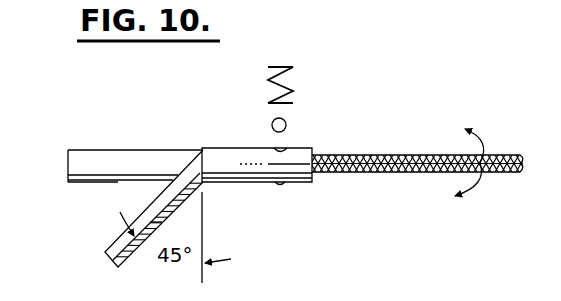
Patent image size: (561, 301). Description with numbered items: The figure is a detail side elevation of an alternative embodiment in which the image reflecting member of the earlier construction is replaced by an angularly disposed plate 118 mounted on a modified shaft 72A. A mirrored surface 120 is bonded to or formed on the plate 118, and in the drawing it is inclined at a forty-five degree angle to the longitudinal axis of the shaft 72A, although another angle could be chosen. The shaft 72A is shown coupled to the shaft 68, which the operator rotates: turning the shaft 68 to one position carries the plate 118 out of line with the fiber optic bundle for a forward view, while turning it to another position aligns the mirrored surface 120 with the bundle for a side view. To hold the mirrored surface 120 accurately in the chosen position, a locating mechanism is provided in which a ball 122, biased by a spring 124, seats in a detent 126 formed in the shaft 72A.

The modified shaft 72A is at (108, 148).
The angularly disposed plate 118 is at (117, 240).
The mirrored surface 120 is at (178, 210).
The ball 122 is at (286, 121).
The spring 124 is at (291, 76).
The detent 126 is at (282, 184).
The shaft 68 is at (410, 173).